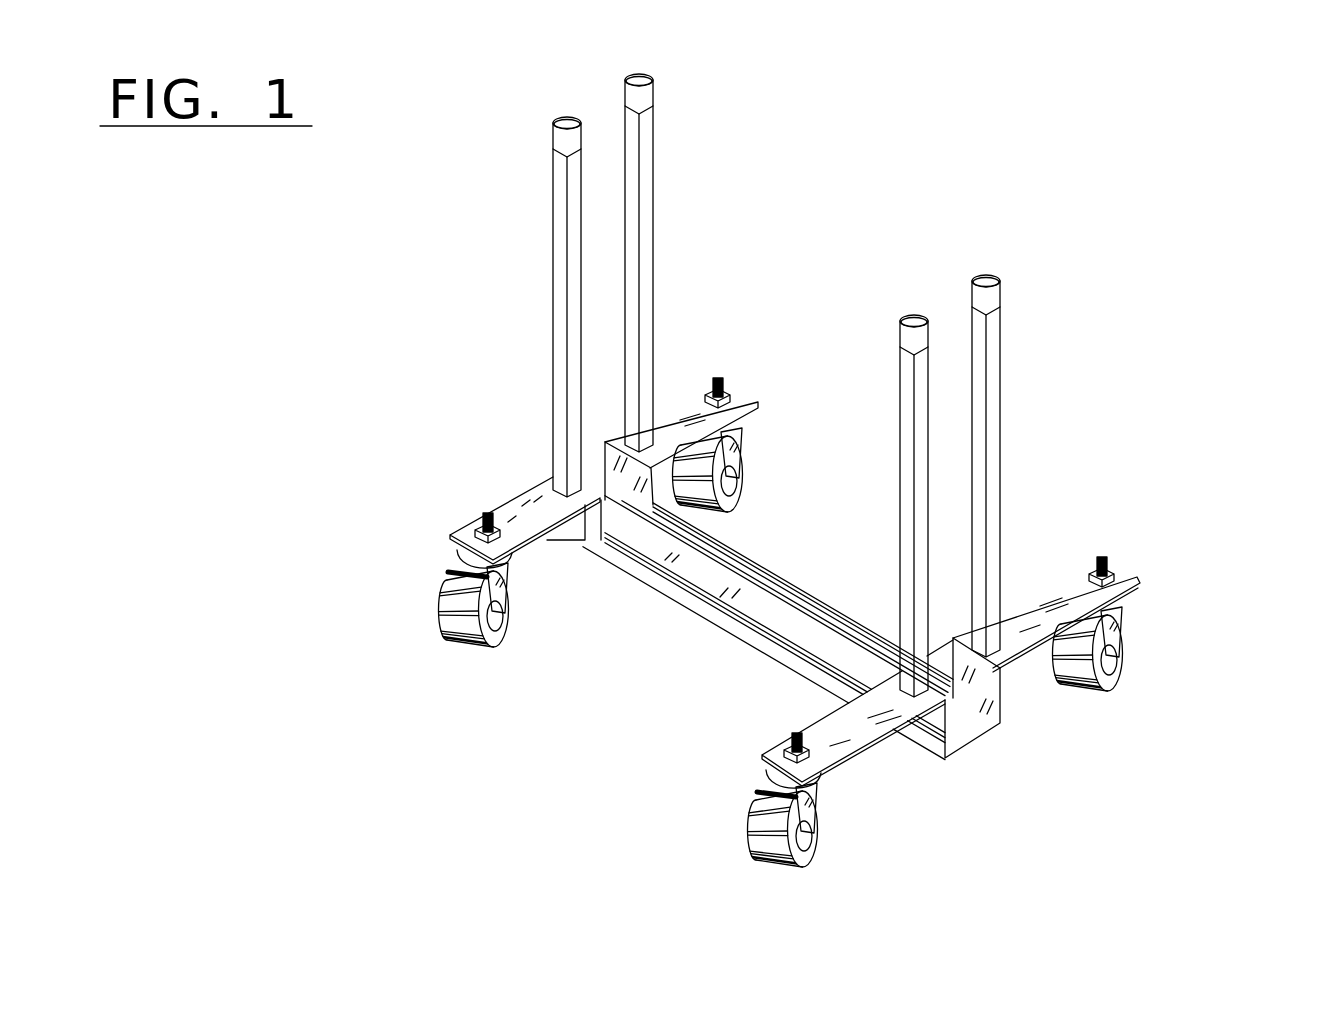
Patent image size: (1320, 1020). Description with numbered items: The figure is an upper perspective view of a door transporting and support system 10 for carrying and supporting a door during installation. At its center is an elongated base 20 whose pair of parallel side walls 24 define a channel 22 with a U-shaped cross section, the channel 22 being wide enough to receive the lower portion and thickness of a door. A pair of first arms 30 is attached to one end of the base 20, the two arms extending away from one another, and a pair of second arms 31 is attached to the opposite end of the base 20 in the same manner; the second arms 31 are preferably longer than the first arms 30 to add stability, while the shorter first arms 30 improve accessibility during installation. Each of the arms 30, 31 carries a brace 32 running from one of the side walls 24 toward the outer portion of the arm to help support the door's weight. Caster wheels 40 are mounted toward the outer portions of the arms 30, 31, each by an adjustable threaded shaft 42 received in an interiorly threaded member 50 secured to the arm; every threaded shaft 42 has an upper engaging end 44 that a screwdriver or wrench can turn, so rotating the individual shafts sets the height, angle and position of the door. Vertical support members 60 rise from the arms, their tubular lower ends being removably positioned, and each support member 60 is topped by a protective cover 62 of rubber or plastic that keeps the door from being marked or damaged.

The door transporting and support system 10 is at (1108, 134).
The base 20 is at (752, 656).
The channel 22 is at (998, 731).
The side walls 24 is at (702, 607).
The first arms 30 is at (515, 510).
The second arms 31 is at (865, 735).
The brace 32 is at (558, 537).
The caster wheels 40 is at (762, 592).
The threaded shaft 42 is at (794, 563).
The upper engaging end 44 is at (490, 515).
The threaded members 50 is at (762, 563).
The support members 60 is at (780, 374).
The protective cover 62 is at (647, 95).